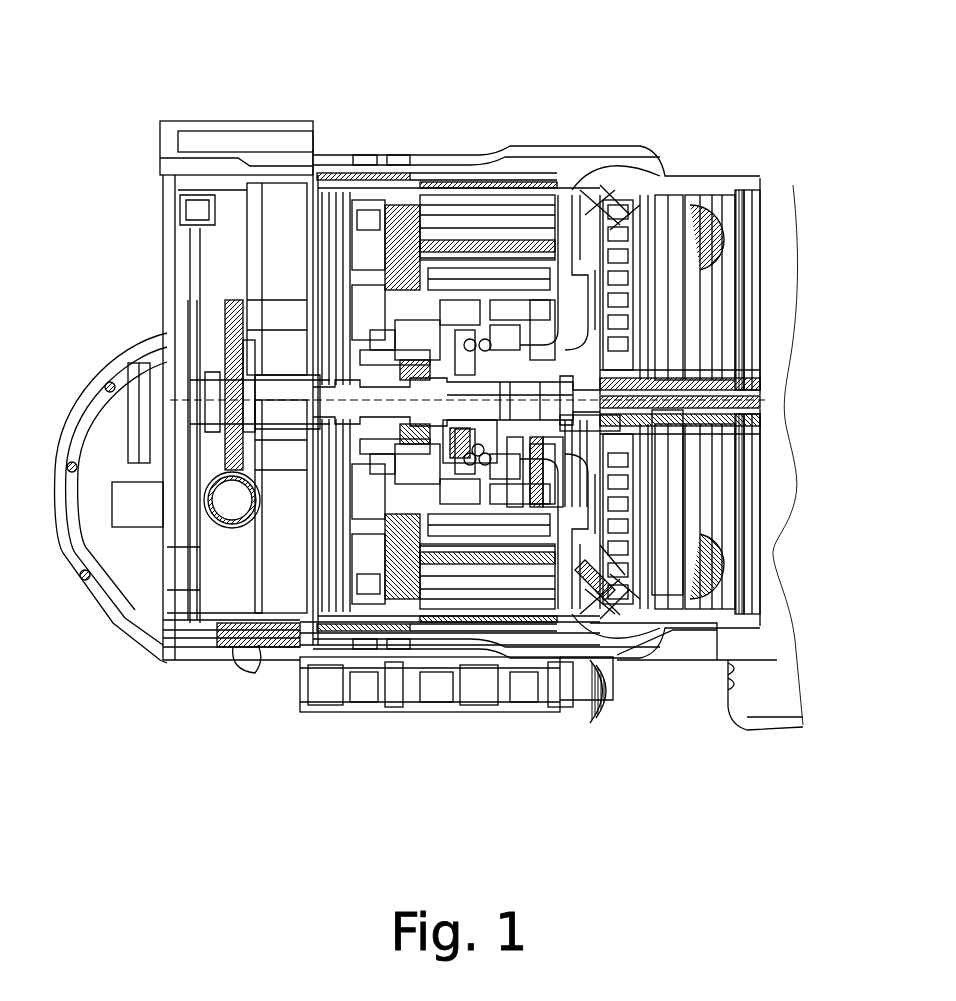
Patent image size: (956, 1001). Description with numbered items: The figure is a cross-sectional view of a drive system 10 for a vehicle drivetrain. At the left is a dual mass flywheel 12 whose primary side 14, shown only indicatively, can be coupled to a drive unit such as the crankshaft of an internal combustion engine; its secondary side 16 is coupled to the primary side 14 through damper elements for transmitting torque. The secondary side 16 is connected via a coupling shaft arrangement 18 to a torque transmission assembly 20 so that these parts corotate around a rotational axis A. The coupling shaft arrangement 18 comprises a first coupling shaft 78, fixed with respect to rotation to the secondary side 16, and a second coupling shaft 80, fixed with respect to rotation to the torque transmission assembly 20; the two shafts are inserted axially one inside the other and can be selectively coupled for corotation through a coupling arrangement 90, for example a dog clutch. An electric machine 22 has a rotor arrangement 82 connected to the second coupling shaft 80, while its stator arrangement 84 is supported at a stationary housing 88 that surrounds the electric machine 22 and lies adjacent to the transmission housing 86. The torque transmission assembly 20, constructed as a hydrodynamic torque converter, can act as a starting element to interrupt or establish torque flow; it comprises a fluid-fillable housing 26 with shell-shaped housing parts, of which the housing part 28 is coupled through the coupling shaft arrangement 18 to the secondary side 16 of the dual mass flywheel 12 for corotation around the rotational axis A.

The drive system 10 is at (812, 356).
The dual mass flywheel 12 is at (268, 218).
The primary side 14 is at (245, 250).
The secondary side 16 is at (320, 188).
The coupling shaft arrangement 18 is at (285, 420).
The torque transmission assembly 20 is at (665, 250).
The electric machine 22 is at (455, 230).
The housing 26 is at (695, 562).
The housing part 28 is at (630, 555).
The first coupling shaft 78 is at (288, 380).
The second coupling shaft 80 is at (560, 378).
The rotor arrangement 82 is at (560, 230).
The stator arrangement 84 is at (580, 480).
The transmission housing 86 is at (748, 192).
The housing 88 is at (497, 167).
The coupling arrangement 90 is at (410, 345).
The rotational axis A is at (325, 398).